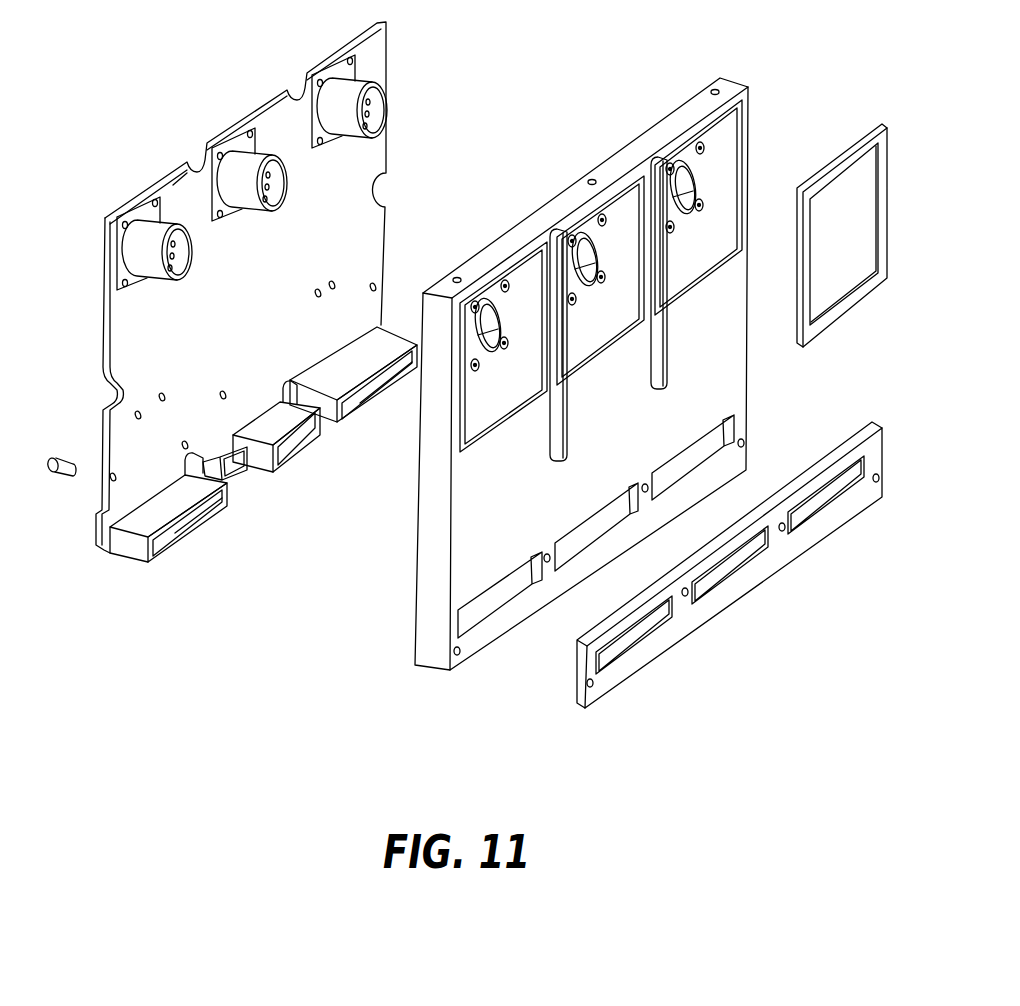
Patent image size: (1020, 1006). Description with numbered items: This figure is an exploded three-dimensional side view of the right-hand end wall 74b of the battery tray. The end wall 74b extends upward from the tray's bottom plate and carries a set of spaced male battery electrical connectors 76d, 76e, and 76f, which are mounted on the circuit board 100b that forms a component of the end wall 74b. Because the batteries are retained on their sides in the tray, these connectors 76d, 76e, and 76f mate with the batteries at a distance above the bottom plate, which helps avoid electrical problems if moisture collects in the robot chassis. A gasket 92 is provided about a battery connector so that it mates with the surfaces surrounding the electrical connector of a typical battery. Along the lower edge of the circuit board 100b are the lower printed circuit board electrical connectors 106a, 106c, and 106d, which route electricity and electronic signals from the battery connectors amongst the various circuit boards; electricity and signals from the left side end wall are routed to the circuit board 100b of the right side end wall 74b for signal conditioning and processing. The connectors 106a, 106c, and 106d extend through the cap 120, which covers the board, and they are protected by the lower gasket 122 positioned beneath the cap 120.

The end wall 74b is at (566, 84).
The circuit board 100b is at (187, 163).
The battery electrical connector 76d is at (388, 98).
The battery electrical connector 76e is at (292, 180).
The battery electrical connector 76f is at (193, 259).
The lower printed circuit board electrical connector 106a is at (360, 408).
The lower printed circuit board electrical connector 106c is at (293, 460).
The lower printed circuit board electrical connector 106d is at (197, 530).
The cap 120 is at (500, 628).
The lower gasket 122 is at (643, 657).
The gasket 92 is at (818, 173).